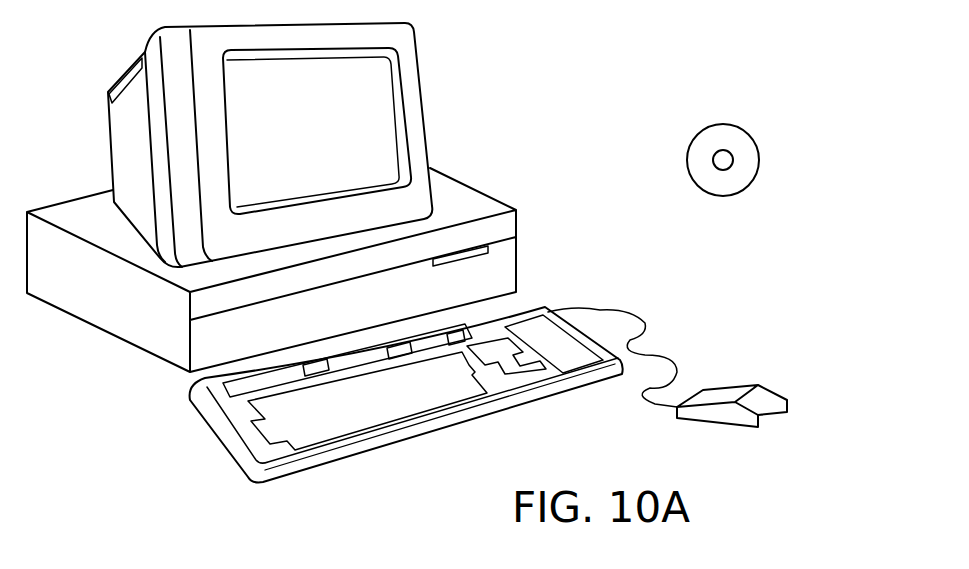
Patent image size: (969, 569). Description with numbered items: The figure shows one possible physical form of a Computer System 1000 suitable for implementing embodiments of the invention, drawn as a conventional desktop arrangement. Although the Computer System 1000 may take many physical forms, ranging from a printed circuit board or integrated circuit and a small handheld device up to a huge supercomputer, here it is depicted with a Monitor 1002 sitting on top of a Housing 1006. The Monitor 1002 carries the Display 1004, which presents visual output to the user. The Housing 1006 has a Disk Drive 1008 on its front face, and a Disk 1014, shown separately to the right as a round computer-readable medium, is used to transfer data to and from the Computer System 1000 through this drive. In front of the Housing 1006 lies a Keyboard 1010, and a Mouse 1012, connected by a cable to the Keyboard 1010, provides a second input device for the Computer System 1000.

The computer system 1000 is at (618, 104).
The monitor 1002 is at (430, 140).
The display 1004 is at (383, 88).
The housing 1006 is at (148, 353).
The disk drive 1008 is at (489, 246).
The keyboard 1010 is at (413, 438).
The mouse 1012 is at (773, 390).
The disk 1014 is at (742, 125).